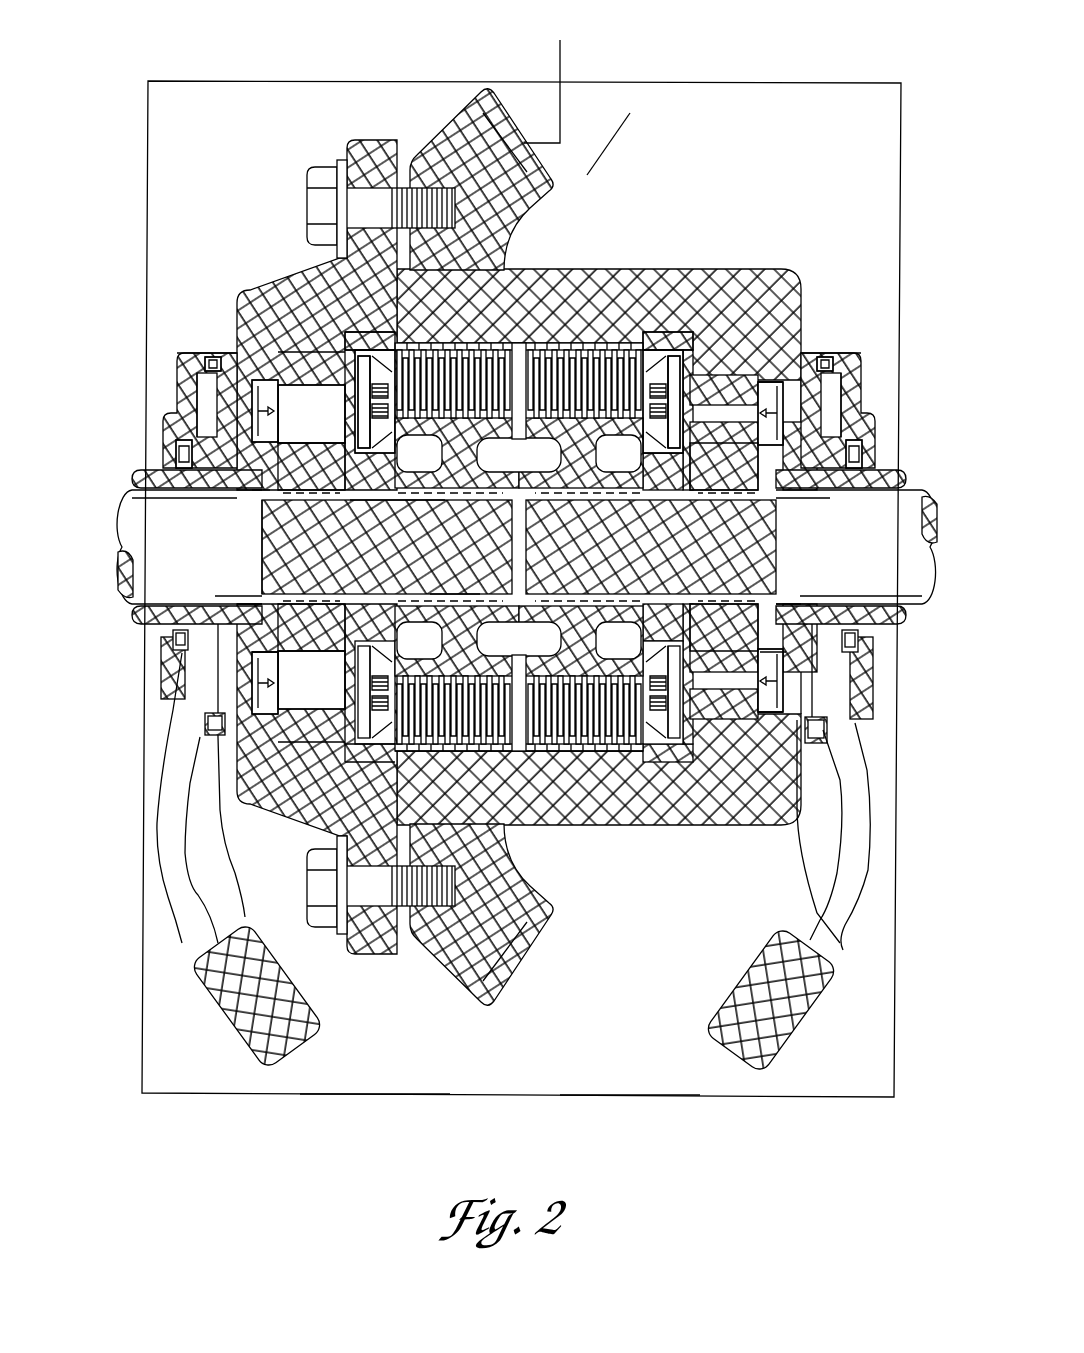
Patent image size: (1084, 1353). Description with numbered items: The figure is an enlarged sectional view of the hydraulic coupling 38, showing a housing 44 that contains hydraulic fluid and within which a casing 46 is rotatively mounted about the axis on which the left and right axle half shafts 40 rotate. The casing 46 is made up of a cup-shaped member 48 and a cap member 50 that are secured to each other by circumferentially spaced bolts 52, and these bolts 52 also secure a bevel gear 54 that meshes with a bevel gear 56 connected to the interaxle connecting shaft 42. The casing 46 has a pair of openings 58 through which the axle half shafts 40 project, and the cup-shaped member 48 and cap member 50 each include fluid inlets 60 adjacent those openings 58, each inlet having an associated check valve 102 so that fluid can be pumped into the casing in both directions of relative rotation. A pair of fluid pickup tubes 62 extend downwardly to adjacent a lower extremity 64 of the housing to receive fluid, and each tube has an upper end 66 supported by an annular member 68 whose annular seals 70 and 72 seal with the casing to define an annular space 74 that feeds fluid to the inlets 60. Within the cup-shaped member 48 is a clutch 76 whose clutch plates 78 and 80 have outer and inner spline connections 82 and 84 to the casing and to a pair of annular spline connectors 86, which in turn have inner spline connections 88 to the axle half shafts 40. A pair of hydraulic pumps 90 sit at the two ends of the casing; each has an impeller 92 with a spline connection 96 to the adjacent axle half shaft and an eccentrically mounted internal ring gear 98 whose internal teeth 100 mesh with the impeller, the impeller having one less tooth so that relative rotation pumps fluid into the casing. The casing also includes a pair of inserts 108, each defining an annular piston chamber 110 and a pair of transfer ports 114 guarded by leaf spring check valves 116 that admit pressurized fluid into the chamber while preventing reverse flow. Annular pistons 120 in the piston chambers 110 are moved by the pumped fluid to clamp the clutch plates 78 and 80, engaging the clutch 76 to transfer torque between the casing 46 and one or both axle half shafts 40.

The hydraulic coupling 38 is at (745, 1104).
The axle half shafts 40 is at (139, 558).
The interaxle connecting shaft 42 is at (560, 64).
The housing 44 is at (375, 1102).
The casing 46 is at (660, 833).
The cup-shaped member 48 is at (603, 270).
The cap member 50 is at (285, 300).
The bolts 52 is at (323, 198).
The bevel gear 54 is at (433, 112).
The bevel gear 56 is at (628, 118).
The openings 58 is at (146, 476).
The fluid inlets 60 is at (222, 354).
The fluid pickup tubes 62 is at (172, 905).
The lower extremity 64 is at (608, 1078).
The upper end 66 is at (215, 787).
The annular member 68 is at (186, 357).
The annular seal 70 is at (200, 395).
The annular seal 72 is at (178, 450).
The annular space 74 is at (206, 364).
The clutch 76 is at (541, 338).
The clutch plates 78 is at (602, 760).
The clutch plates 80 is at (525, 505).
The outer spline connections 82 is at (555, 760).
The inner spline connections 84 is at (402, 610).
The annular spline connectors 86 is at (435, 610).
The inner spline connections 88 is at (370, 610).
The hydraulic pumps 90 is at (316, 343).
The impeller 92 is at (245, 625).
The spline connection 96 is at (297, 598).
The internal ring gear 98 is at (205, 782).
The internal teeth 100 is at (262, 492).
The check valve 102 is at (766, 450).
The inserts 108 is at (358, 352).
The annular piston chamber 110 is at (350, 362).
The transfer ports 114 is at (348, 416).
The check valve 116 is at (345, 428).
The annular pistons 120 is at (625, 446).